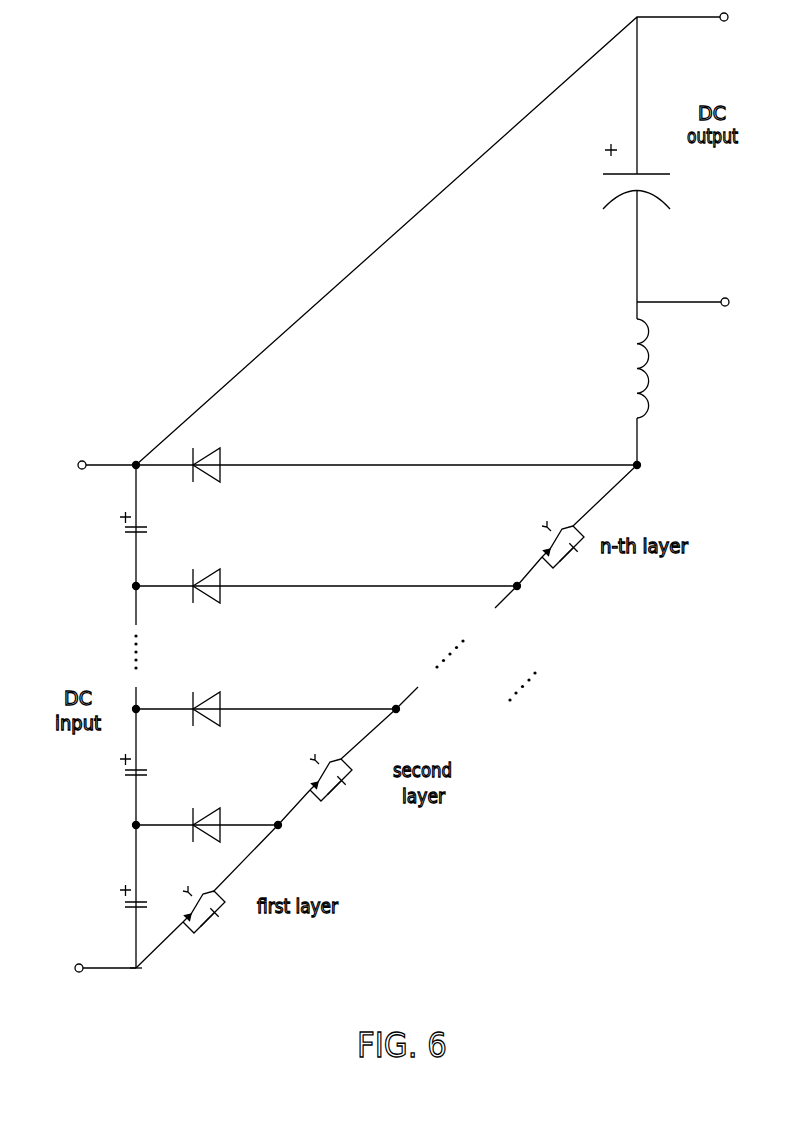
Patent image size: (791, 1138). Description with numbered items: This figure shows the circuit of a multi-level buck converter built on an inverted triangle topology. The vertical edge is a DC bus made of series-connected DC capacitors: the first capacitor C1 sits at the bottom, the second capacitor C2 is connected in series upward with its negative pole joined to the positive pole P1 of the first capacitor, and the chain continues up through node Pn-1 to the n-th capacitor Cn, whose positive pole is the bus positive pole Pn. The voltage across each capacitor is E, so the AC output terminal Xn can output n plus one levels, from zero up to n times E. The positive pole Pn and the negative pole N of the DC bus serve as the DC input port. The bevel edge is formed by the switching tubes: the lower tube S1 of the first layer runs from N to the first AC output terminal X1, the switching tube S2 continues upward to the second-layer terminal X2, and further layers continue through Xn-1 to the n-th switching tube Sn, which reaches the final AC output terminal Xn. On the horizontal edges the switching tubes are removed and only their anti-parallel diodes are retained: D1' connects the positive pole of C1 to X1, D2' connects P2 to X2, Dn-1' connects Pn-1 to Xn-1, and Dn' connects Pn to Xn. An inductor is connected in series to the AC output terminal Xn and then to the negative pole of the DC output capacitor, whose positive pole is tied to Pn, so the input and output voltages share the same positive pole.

The positive pole of the DC bus Pn is at (124, 456).
The node between DC capacitors Cn-1 and Cn Pn-1 is at (119, 590).
The positive pole of the second capacitor P2 is at (126, 710).
The positive pole of the first capacitor P1 is at (126, 828).
The negative pole of the DC bus N is at (127, 980).
The AC output terminal Xn is at (647, 481).
The AC output terminal of the (n-1)-th layer Xn-1 is at (537, 595).
The AC output terminal of the second layer X2 is at (410, 717).
The AC output terminal of the first layer X1 is at (292, 832).
The n-th DC capacitor Cn is at (118, 530).
The second capacitor C2 is at (119, 774).
The first capacitor C1 is at (119, 901).
The capacitor voltage E is at (159, 723).
The anti-parallel diode of the n-th horizontal edge Dn' is at (228, 474).
The anti-parallel diode of the (n-1)-th horizontal edge Dn-1' is at (235, 595).
The anti-parallel diode of the second horizontal edge D2' is at (229, 716).
The anti-parallel diode of the first horizontal edge D1' is at (224, 830).
The n-th switching tube Sn is at (570, 552).
The second switching tube S2 is at (339, 783).
The lower tube of the first layer S1 is at (212, 913).